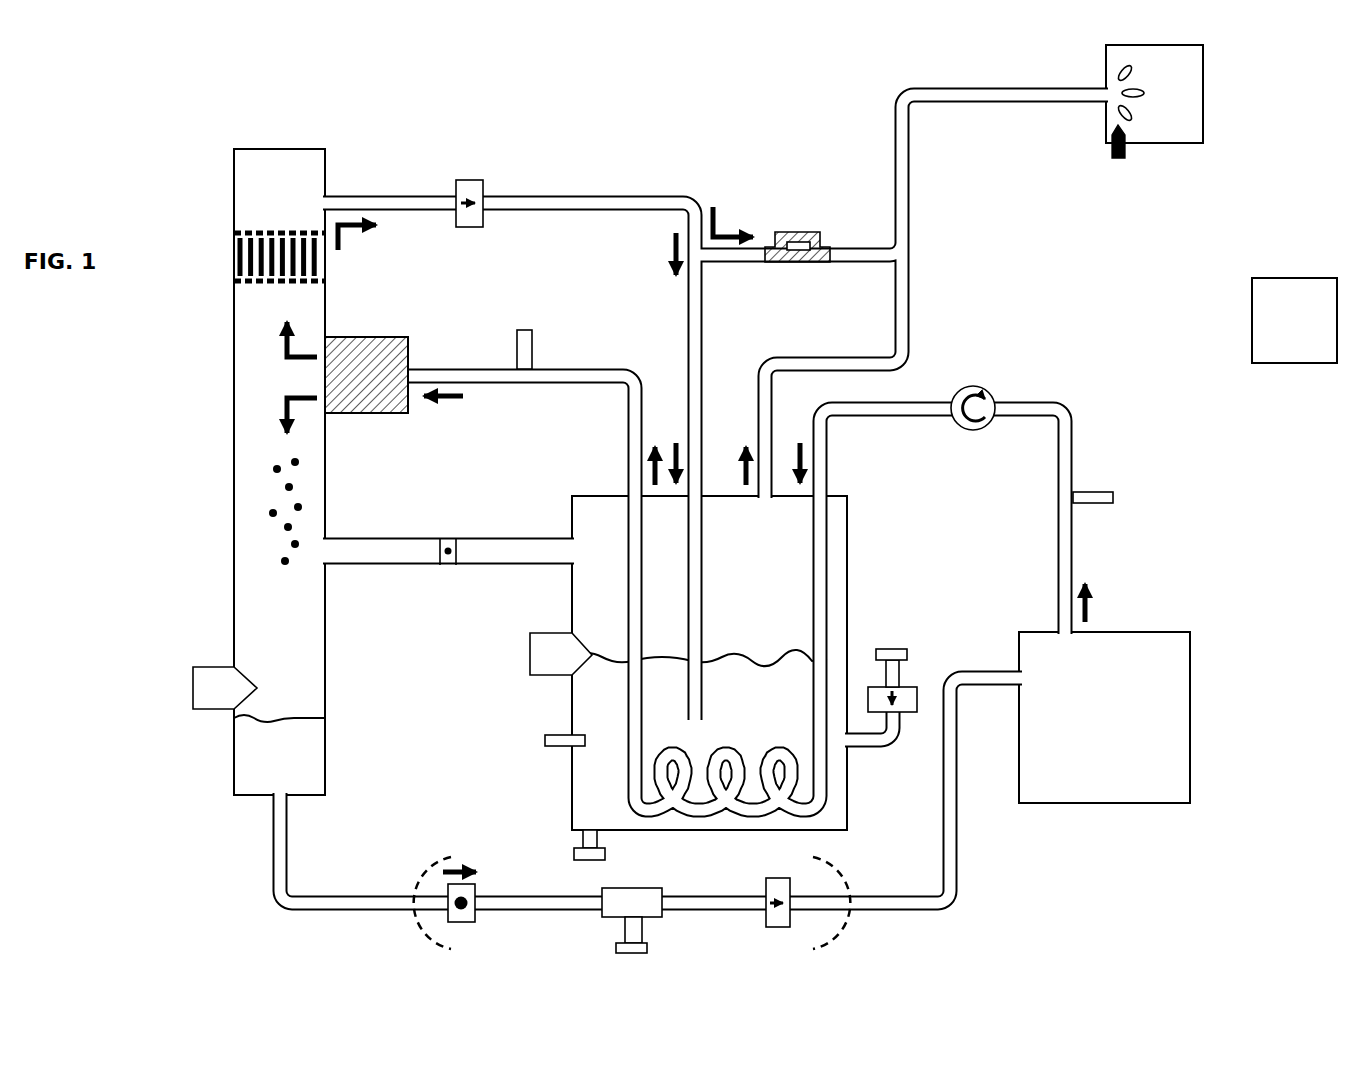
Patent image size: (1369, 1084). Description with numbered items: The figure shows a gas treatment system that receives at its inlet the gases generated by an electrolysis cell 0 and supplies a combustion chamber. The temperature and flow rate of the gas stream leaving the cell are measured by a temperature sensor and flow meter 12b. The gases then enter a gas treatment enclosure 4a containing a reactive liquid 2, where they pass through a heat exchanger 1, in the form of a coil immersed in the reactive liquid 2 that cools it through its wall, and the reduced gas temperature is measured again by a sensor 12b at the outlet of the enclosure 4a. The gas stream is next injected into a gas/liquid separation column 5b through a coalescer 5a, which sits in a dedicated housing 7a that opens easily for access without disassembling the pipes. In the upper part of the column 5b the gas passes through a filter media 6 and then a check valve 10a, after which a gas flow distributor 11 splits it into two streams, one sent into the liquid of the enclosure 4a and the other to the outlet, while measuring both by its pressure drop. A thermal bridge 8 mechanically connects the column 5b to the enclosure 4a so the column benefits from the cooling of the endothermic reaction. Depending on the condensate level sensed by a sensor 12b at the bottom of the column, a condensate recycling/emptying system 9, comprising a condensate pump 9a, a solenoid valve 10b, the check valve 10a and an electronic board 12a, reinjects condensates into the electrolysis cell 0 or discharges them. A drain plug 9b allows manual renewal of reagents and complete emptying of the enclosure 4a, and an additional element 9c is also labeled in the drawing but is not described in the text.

The electrolysis cell 0 is at (1137, 630).
The heat exchanger 1 is at (825, 806).
The reactive liquid 2 is at (588, 785).
The gas treatment enclosure 4a is at (852, 582).
The coalescer 5a is at (368, 350).
The gas/liquid separation column 5b is at (231, 434).
The filter media 6 is at (308, 261).
The housing 7a is at (418, 361).
The thermal bridge 8 is at (496, 536).
The condensate recycling/emptying system 9 is at (843, 937).
The condensate pump 9a is at (463, 925).
The drain plug 9b is at (573, 855).
The sensor 9c is at (893, 647).
The check valve 10a is at (469, 178).
The solenoid valve 10b is at (636, 886).
The gas flow distributor 11 is at (798, 229).
The electronic board 12a is at (1295, 276).
The sensor 12b is at (191, 690).